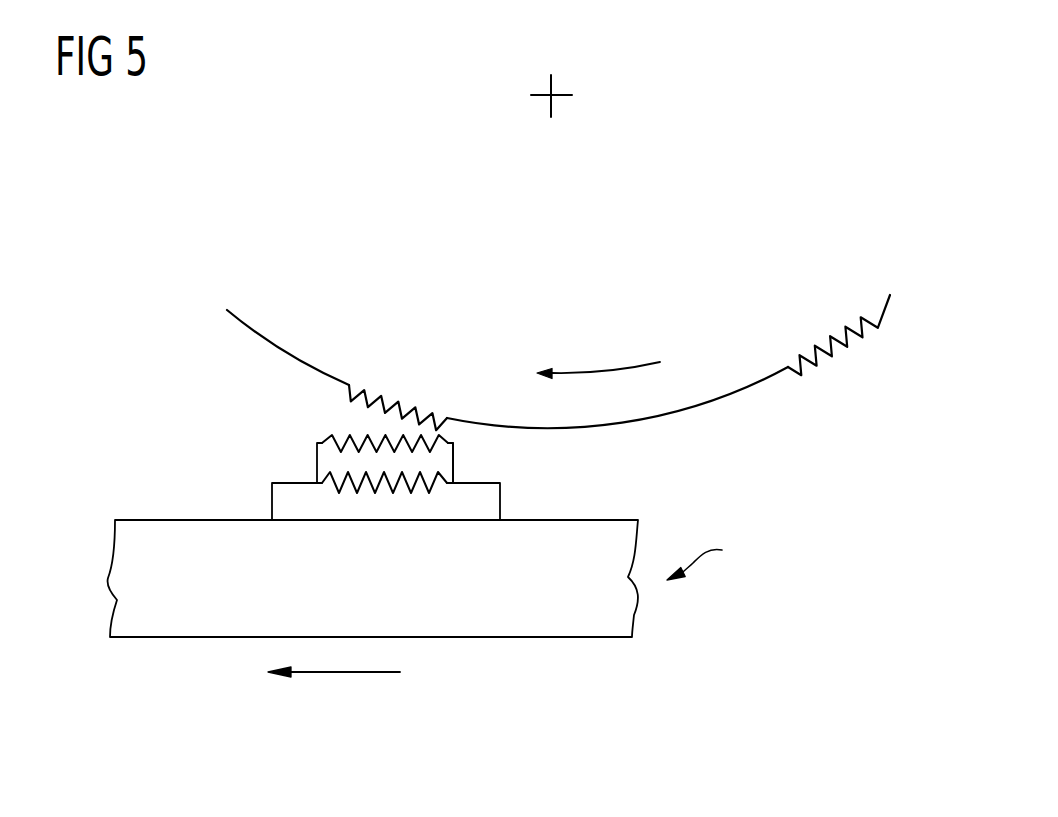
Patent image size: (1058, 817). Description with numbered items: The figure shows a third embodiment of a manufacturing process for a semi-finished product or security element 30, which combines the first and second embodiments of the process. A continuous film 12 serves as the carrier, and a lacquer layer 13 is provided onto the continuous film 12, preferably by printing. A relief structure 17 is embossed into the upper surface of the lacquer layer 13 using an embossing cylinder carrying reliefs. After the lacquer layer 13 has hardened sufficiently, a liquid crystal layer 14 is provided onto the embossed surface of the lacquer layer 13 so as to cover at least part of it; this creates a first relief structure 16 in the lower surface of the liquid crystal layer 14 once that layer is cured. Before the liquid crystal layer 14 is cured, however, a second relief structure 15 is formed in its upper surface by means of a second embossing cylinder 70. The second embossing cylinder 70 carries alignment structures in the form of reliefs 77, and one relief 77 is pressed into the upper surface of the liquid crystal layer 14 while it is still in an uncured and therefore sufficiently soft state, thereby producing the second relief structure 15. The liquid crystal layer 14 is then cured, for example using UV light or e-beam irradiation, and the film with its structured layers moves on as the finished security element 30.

The continuous film 12 is at (125, 597).
The lacquer layer 13 is at (488, 498).
The liquid crystal layer 14 is at (328, 462).
The second relief structure 15 is at (345, 438).
The first relief structure 16 is at (442, 470).
The relief structure 17 is at (445, 490).
The security element 30 is at (710, 556).
The second embossing cylinder 70 is at (712, 392).
The reliefs 77 is at (387, 396).